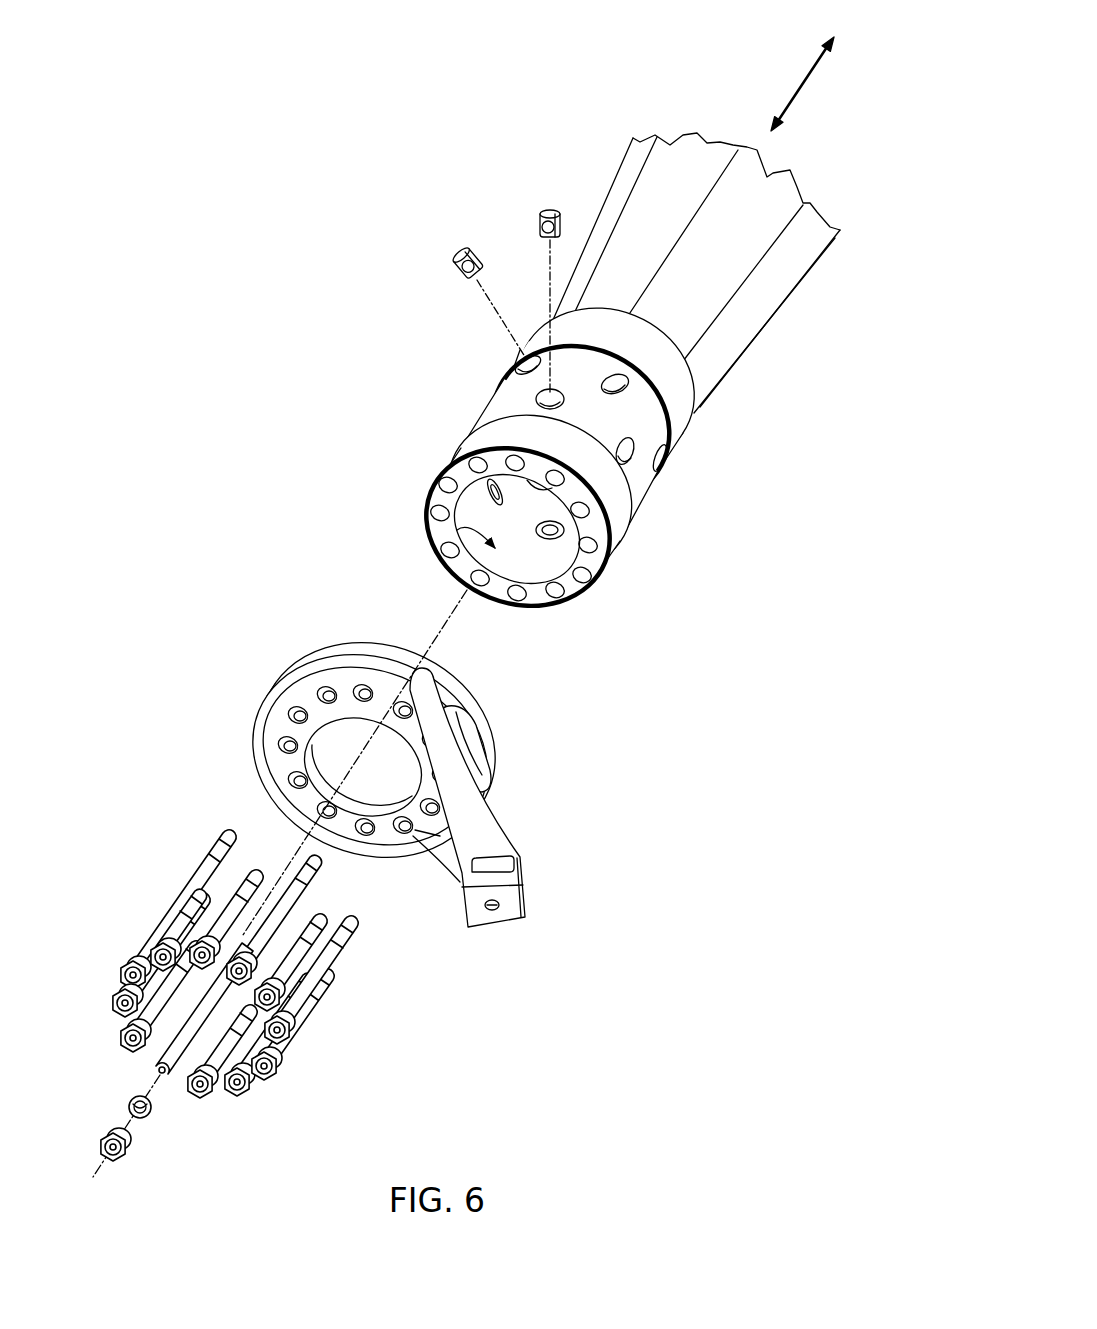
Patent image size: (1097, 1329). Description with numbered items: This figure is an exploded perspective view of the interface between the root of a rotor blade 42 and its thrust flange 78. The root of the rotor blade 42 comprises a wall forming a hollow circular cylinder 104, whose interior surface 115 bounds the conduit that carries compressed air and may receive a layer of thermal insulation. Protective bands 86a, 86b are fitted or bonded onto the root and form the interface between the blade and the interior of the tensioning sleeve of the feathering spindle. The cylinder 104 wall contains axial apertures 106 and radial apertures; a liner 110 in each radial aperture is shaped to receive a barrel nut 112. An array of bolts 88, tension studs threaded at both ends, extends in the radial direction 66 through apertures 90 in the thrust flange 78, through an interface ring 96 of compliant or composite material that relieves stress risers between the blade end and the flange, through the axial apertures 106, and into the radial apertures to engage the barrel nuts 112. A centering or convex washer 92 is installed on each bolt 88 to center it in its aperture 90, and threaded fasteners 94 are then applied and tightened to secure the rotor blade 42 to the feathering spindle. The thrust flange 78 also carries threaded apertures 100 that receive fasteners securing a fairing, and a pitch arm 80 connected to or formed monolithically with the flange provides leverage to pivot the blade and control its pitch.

The rotor blade 42 is at (640, 205).
The radial direction 66 is at (797, 92).
The thrust flange 78 is at (334, 773).
The pitch arm 80 is at (530, 880).
The protective band 86a is at (612, 530).
The protective band 86b is at (681, 432).
The bolts 88 is at (215, 858).
The apertures 90 is at (328, 826).
The washer 92 is at (155, 1113).
The threaded fasteners 94 is at (130, 1150).
The interface ring 96 is at (529, 584).
The threaded apertures 100 is at (298, 813).
The hollow circular cylinder 104 is at (547, 499).
The axial apertures 106 is at (554, 606).
The liner 110 is at (530, 397).
The barrel nut 112 is at (536, 210).
The surface 115 is at (455, 548).